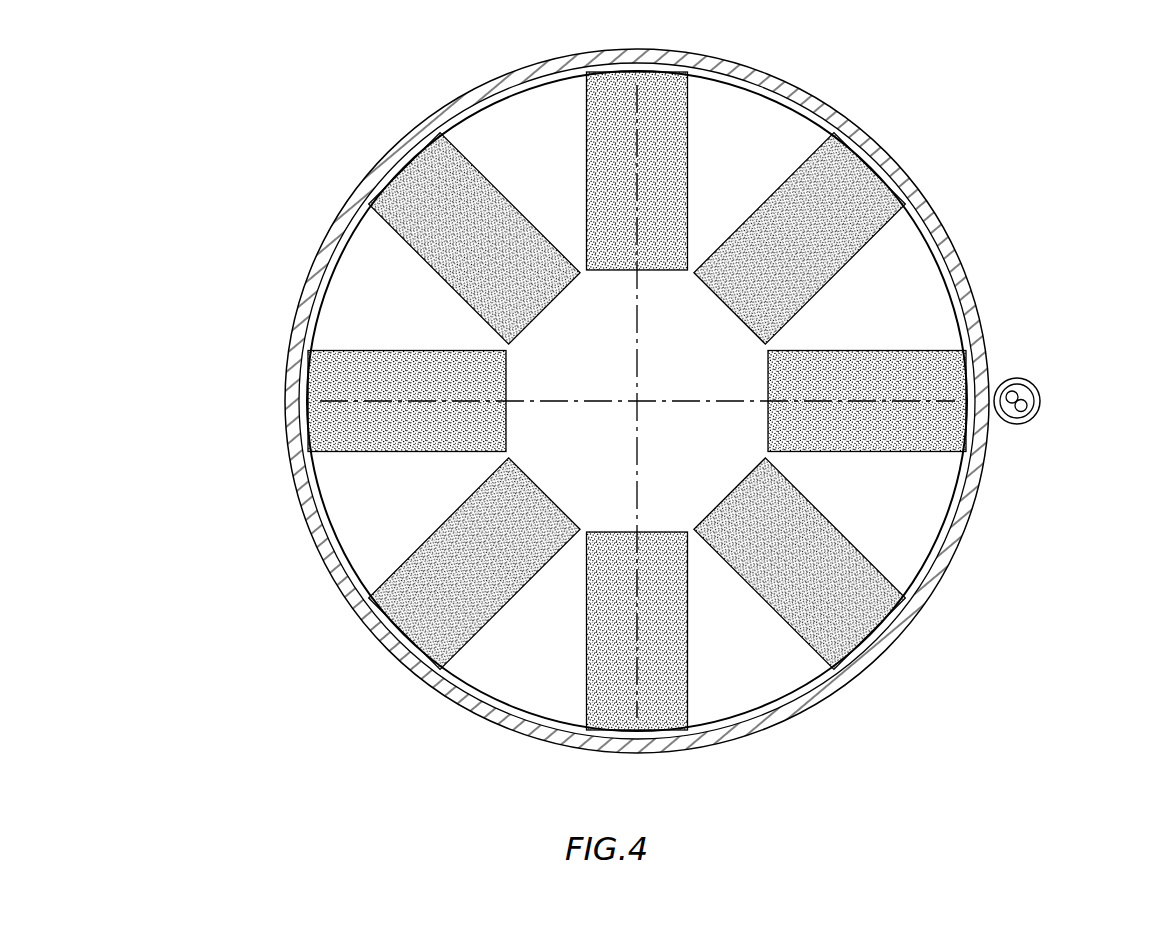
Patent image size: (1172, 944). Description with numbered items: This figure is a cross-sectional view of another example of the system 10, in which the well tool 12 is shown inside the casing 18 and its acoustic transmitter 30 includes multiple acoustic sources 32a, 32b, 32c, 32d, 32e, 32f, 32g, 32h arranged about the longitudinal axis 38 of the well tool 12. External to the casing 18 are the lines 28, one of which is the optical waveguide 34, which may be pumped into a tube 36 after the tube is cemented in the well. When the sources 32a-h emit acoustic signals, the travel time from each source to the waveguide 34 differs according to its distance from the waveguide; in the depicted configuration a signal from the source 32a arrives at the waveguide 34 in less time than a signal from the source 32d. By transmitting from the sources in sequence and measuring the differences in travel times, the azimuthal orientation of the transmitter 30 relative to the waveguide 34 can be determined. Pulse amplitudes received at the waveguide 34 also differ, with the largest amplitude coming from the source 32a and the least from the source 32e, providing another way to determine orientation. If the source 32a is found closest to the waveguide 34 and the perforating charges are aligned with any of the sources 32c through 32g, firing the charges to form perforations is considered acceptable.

The system 10 is at (1026, 110).
The well tool 12 is at (285, 296).
The casing 18 is at (738, 739).
The lines 28 is at (1038, 395).
The acoustic transmitter 30 is at (490, 701).
The acoustic source 32a is at (840, 347).
The acoustic source 32b is at (803, 163).
The acoustic source 32c is at (583, 108).
The acoustic source 32d is at (440, 279).
The acoustic source 32e is at (343, 455).
The acoustic source 32f is at (482, 634).
The acoustic source 32g is at (692, 671).
The acoustic source 32h is at (840, 517).
The optical waveguide 34 is at (1034, 374).
The tube 36 is at (1036, 414).
The longitudinal axis 38 is at (637, 402).